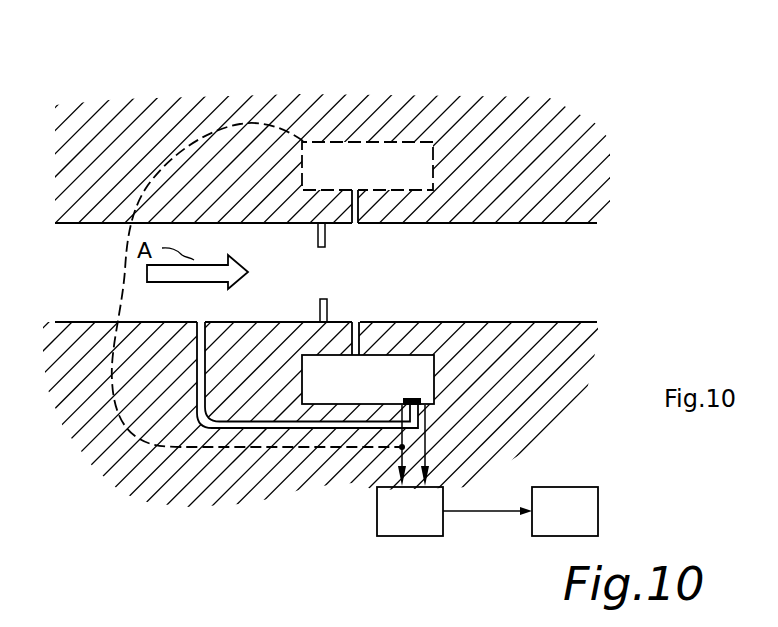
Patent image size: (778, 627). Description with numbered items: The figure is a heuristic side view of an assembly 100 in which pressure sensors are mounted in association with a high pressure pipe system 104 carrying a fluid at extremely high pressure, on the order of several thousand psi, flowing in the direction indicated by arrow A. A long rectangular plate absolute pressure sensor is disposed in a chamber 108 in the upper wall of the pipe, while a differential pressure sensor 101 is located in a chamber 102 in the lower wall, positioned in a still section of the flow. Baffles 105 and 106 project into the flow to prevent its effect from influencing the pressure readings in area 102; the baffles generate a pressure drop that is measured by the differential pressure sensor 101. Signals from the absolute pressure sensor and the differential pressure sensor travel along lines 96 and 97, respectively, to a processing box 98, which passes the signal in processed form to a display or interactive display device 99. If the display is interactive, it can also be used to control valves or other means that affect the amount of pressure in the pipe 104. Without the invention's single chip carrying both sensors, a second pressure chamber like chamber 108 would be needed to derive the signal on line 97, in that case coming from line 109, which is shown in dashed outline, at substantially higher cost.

The assembly 100 is at (432, 62).
The differential pressure sensor 101 is at (417, 398).
The chamber 102 is at (390, 396).
The high pressure pipe system 104 is at (255, 224).
The baffle 105 is at (326, 238).
The baffle 106 is at (329, 302).
The chamber 108 is at (389, 183).
The line 109 is at (125, 277).
The line 96 is at (432, 443).
The line 97 is at (402, 447).
The processing box 98 is at (424, 528).
The display or interactive display device 99 is at (579, 528).